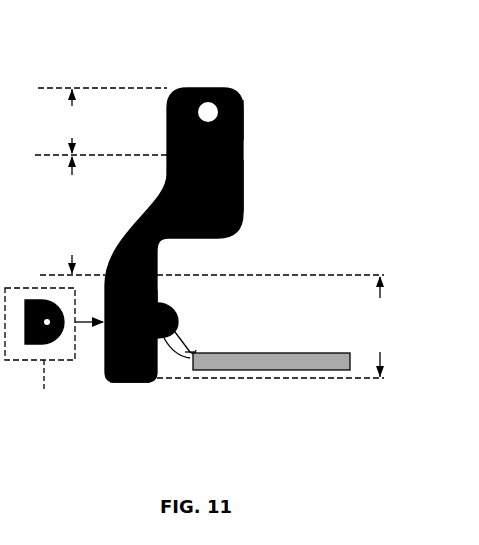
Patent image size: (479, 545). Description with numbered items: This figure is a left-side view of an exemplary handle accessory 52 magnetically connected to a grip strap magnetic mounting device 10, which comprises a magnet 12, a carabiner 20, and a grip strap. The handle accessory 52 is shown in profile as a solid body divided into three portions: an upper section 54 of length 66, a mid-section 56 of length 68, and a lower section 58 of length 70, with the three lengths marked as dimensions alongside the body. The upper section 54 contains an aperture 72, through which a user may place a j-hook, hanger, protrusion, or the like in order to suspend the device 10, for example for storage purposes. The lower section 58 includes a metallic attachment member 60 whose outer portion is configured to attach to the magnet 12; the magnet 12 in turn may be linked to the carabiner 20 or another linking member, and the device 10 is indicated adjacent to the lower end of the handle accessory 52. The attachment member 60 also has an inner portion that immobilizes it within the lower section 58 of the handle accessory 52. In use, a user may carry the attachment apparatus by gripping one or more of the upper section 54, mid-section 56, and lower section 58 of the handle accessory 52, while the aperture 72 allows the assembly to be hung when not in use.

The grip strap magnetic mounting device 10 is at (296, 349).
The magnet 12 is at (204, 311).
The carabiner 20 is at (197, 343).
The handle accessory 52 is at (191, 75).
The upper section 54 is at (246, 118).
The mid-section 56 is at (247, 192).
The lower section 58 is at (116, 386).
The metallic attachment member 60 is at (162, 302).
The length of upper section 66 is at (86, 121).
The length of mid-section 68 is at (72, 215).
The length of lower section 70 is at (381, 326).
The aperture 72 is at (214, 104).